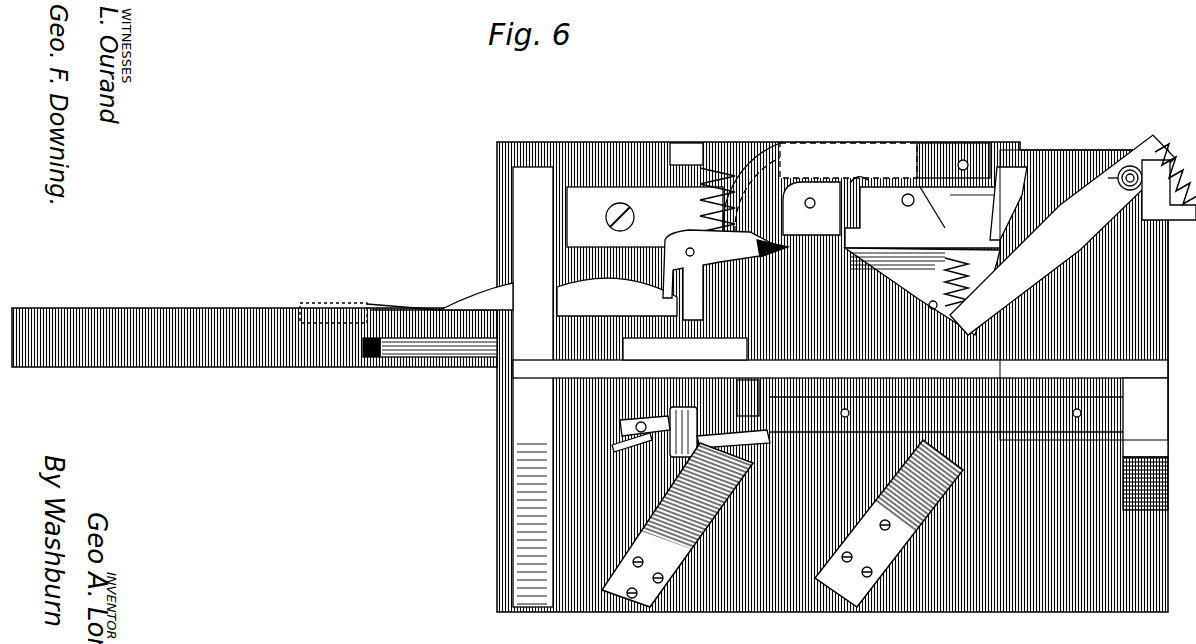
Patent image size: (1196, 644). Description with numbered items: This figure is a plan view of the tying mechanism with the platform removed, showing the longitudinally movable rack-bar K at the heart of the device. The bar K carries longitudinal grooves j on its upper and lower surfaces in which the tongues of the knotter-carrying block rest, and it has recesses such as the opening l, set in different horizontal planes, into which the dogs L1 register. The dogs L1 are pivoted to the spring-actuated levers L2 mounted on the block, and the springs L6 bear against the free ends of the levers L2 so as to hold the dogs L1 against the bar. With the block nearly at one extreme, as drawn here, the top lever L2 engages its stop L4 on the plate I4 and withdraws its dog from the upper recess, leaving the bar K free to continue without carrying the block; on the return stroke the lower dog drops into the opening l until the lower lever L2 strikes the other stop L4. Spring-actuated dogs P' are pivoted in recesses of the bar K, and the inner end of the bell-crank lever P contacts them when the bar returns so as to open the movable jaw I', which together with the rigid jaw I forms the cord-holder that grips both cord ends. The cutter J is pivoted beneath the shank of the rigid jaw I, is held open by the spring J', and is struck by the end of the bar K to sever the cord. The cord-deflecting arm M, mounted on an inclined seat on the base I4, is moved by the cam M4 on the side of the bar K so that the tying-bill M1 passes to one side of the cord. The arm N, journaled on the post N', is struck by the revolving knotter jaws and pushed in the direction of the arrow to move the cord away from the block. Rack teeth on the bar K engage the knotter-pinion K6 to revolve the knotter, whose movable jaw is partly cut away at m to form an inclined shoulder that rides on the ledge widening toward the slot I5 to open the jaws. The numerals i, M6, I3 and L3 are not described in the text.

The rack-bar K is at (278, 366).
The spring-actuated dogs P' is at (398, 302).
The block i is at (383, 357).
The longitudinal grooves j is at (440, 345).
The opening l is at (840, 370).
The cord-deflecting arm M is at (847, 147).
The tying-bill M1 is at (719, 275).
The cam M4 is at (558, 297).
The block M6 is at (651, 208).
The cut-away portion of the movable jaw m is at (778, 257).
The knotter-pinion K6 is at (685, 349).
The bell-crank lever P is at (836, 193).
The rigid jaw of the cord-holder I is at (927, 217).
The movable jaw of the cord-holder I' is at (972, 205).
The block I3 is at (965, 172).
The plate or base I4 is at (1084, 295).
The slot I5 is at (1017, 173).
The cutter J is at (922, 291).
The spring J' is at (947, 282).
The arm N is at (1062, 235).
The post N' is at (1169, 168).
The dogs L1 is at (641, 434).
The spring-actuated levers L2 is at (733, 439).
The plate L3 is at (677, 525).
The stops L4 is at (889, 523).
The springs L6 is at (750, 408).